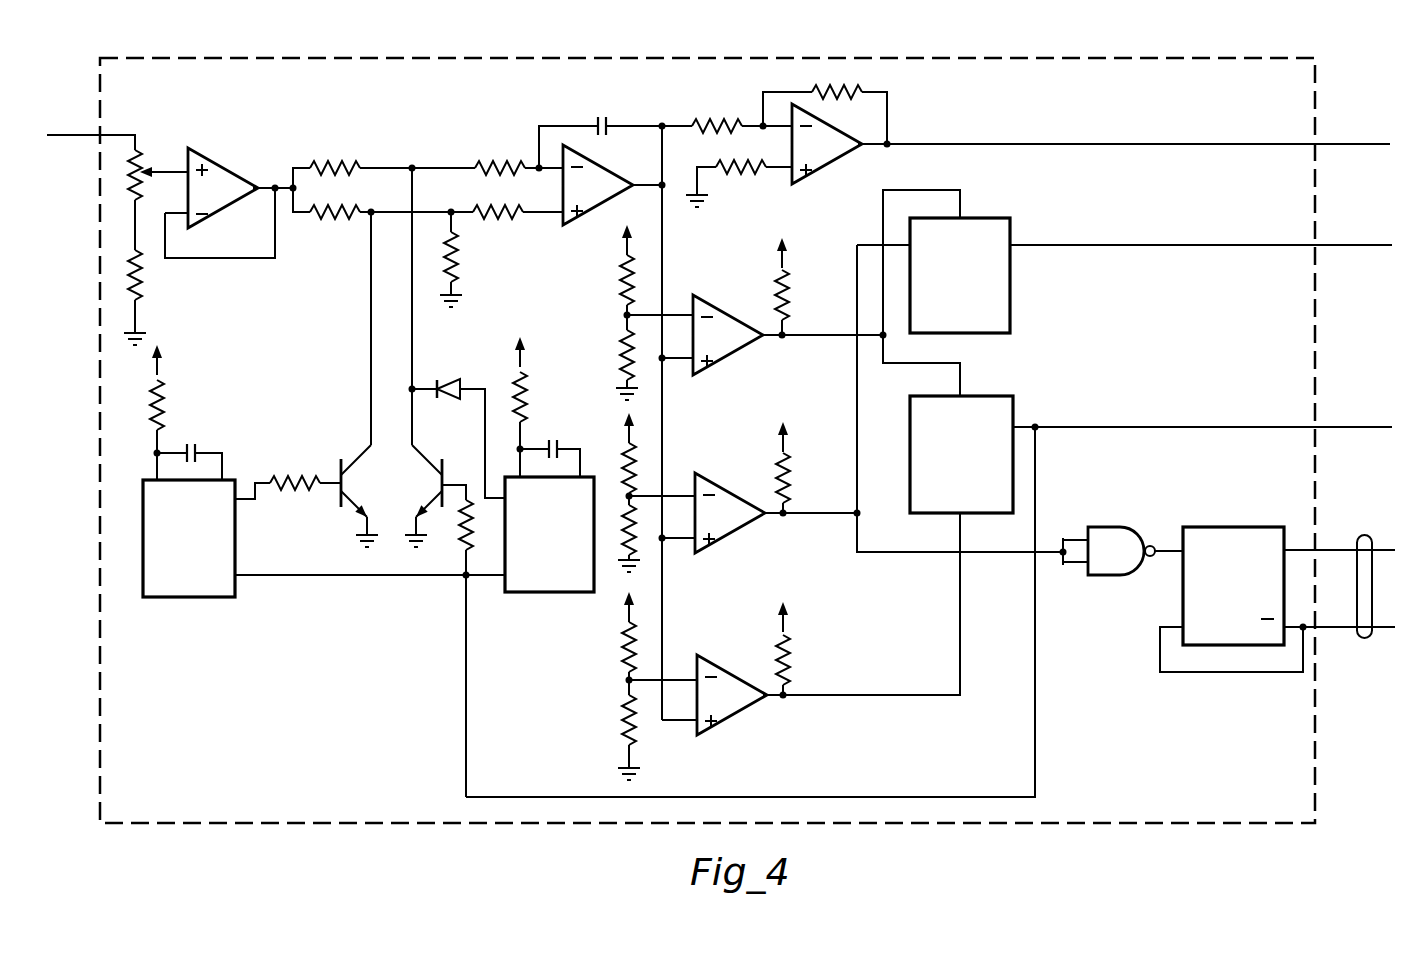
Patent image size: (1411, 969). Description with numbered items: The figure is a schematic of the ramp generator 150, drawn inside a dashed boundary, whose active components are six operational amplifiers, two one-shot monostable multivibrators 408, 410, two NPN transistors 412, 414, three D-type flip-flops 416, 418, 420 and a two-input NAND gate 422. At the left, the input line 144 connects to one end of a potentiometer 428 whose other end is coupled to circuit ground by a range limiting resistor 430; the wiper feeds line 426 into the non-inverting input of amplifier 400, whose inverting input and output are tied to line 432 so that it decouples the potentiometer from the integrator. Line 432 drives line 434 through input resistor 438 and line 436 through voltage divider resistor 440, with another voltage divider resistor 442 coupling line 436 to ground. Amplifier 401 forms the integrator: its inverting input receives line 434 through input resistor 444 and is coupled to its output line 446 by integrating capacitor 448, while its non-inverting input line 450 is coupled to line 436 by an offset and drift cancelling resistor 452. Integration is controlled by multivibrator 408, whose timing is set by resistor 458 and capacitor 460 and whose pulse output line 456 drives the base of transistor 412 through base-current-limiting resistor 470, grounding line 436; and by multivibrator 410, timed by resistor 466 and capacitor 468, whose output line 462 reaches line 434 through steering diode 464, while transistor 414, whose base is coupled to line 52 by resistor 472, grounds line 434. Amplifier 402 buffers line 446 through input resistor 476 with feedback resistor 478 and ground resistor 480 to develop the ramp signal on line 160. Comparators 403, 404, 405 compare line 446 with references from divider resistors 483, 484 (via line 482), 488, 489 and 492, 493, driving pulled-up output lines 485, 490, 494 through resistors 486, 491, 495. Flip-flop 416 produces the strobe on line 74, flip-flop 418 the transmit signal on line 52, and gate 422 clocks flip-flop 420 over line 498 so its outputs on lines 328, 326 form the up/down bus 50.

The line 144 is at (88, 140).
The potentiometer 428 is at (144, 156).
The line 426 is at (183, 170).
The operational amplifier 400 is at (225, 172).
The line 432 is at (242, 258).
The range limiting resistor 430 is at (145, 285).
The input resistor 438 is at (337, 158).
The voltage divider resistor 440 is at (336, 220).
The line 434 is at (424, 164).
The line 436 is at (368, 335).
The input resistor 444 is at (502, 158).
The integrating capacitor 448 is at (606, 120).
The operational amplifier 401 is at (615, 174).
The offset and drift cancelling resistor 452 is at (486, 216).
The line 450 is at (554, 216).
The voltage divider resistor 442 is at (459, 256).
The line 446 is at (664, 246).
The input resistor 476 is at (720, 124).
The feedback resistor 478 is at (833, 90).
The offset and drift cancelling resistor 480 is at (754, 162).
The operational amplifier 402 is at (841, 160).
The line 160 is at (1370, 148).
The voltage divider resistor 483 is at (618, 282).
The voltage divider resistor 484 is at (614, 355).
The line 482 is at (678, 304).
The operational amplifier 403 is at (743, 314).
The pull-up resistor 486 is at (788, 284).
The line 485 is at (800, 340).
The D-type flip-flop 416 is at (978, 296).
The line 74 is at (1382, 247).
The D-type flip-flop 418 is at (978, 469).
The line 52 is at (1385, 429).
The voltage divider resistor 488 is at (626, 463).
The voltage divider resistor 489 is at (638, 534).
The operational amplifier 404 is at (740, 492).
The pull-up resistor 491 is at (790, 460).
The line 490 is at (795, 514).
The voltage divider resistor 492 is at (620, 650).
The voltage divider resistor 493 is at (620, 720).
The operational amplifier 405 is at (746, 674).
The pull-up resistor 495 is at (794, 664).
The line 494 is at (852, 698).
The two-input NAND gate 422 is at (1126, 562).
The line 498 is at (1164, 544).
The D-type flip-flop 420 is at (1256, 596).
The line 328 is at (1326, 546).
The line 326 is at (1335, 630).
The bus 50 is at (1370, 645).
The ramp generator 150 is at (893, 824).
The time-constant-setting resistor 458 is at (166, 394).
The time-constant-setting capacitor 460 is at (190, 446).
The line 456 is at (248, 484).
The base-current-limiting resistor 470 is at (304, 476).
The NPN transistor 412 is at (336, 489).
The 1-shot monostable multivibrator 408 is at (210, 549).
The steering diode 464 is at (448, 380).
The line 462 is at (478, 424).
The NPN transistor 414 is at (458, 448).
The base-current-limiting resistor 472 is at (460, 544).
The time-constant-setting resistor 466 is at (526, 398).
The time-constant-setting capacitor 468 is at (552, 440).
The 1-shot monostable multivibrator 410 is at (568, 549).